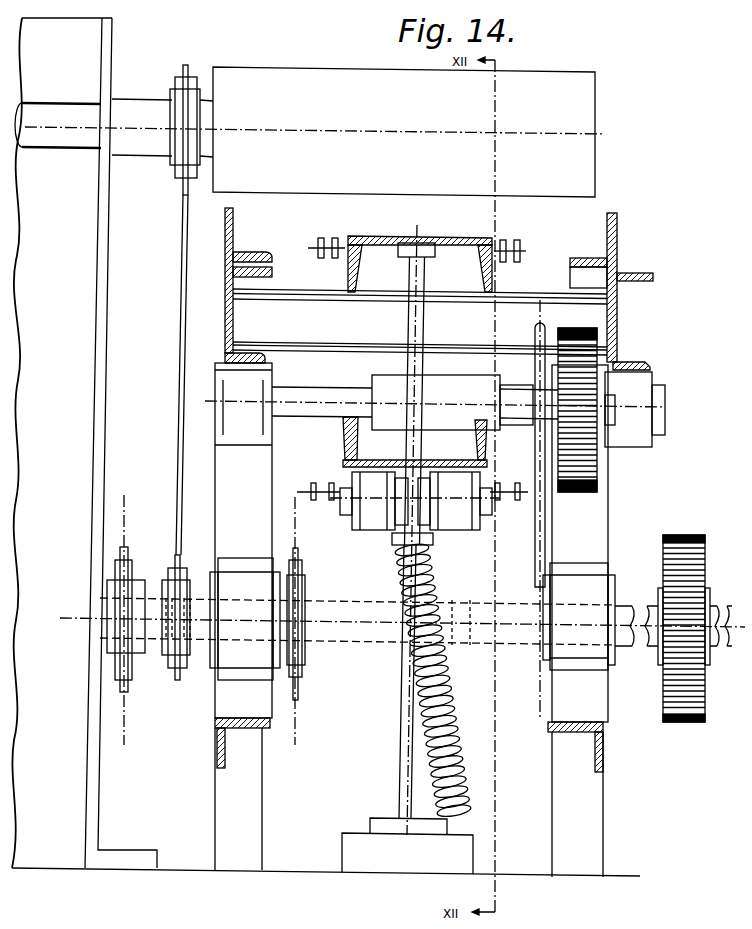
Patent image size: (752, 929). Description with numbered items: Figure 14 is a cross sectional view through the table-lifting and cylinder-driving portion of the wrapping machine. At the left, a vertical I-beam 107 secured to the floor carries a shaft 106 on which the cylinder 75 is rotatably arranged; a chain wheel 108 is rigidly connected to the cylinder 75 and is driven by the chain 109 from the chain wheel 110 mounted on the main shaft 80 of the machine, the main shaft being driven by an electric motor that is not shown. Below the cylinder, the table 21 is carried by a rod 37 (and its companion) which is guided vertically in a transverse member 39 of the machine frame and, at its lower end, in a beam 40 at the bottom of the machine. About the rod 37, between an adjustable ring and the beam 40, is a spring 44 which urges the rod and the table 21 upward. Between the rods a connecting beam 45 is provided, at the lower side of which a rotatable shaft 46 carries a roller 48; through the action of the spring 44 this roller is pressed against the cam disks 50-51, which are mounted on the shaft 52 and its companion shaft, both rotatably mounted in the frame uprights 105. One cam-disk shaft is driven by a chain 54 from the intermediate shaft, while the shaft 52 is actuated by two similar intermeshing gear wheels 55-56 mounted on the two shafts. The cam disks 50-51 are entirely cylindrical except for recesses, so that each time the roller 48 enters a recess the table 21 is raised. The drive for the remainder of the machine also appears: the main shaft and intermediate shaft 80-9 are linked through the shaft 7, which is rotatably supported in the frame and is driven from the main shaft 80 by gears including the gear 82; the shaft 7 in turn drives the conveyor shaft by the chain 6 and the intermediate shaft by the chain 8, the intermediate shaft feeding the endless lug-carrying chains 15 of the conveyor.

The chain 6 is at (127, 523).
The shaft 7 is at (148, 598).
The chain 8 is at (298, 528).
The endless chains 15 is at (322, 238).
The table 21 is at (432, 240).
The rod 37 is at (420, 768).
The transverse member 39 is at (322, 303).
The beam 40 is at (386, 864).
The spring 44 is at (421, 712).
The connecting beam 45 is at (348, 437).
The rotatable shaft 46 is at (488, 500).
The roller 48 is at (405, 522).
The cam disks 50-51 is at (420, 386).
The shaft 52 is at (313, 397).
The chain 54 is at (540, 528).
The intermeshing gear wheels 55-56 is at (592, 360).
The cylinder 75 is at (578, 163).
The main shaft 80 is at (162, 623).
The shaft section 80-9 is at (459, 608).
The gear 82 is at (684, 533).
The columns 105 is at (233, 225).
The shaft 106 is at (80, 135).
The vertical I-beam 107 is at (107, 58).
The chain wheel 108 is at (195, 80).
The chain 109 is at (183, 336).
The chain wheel 110 is at (183, 660).